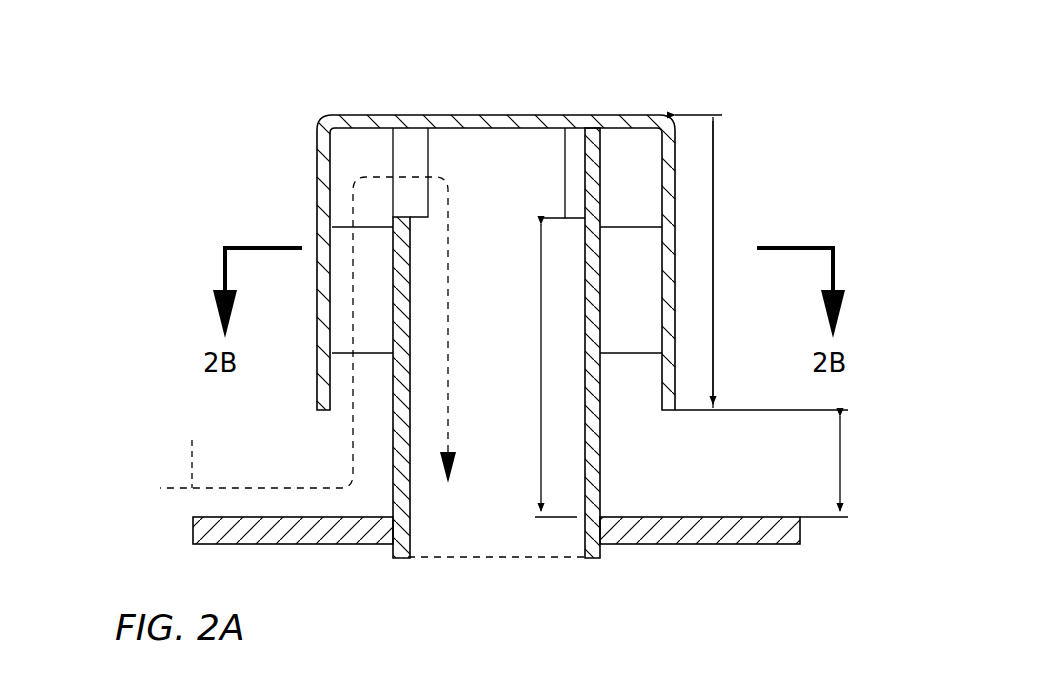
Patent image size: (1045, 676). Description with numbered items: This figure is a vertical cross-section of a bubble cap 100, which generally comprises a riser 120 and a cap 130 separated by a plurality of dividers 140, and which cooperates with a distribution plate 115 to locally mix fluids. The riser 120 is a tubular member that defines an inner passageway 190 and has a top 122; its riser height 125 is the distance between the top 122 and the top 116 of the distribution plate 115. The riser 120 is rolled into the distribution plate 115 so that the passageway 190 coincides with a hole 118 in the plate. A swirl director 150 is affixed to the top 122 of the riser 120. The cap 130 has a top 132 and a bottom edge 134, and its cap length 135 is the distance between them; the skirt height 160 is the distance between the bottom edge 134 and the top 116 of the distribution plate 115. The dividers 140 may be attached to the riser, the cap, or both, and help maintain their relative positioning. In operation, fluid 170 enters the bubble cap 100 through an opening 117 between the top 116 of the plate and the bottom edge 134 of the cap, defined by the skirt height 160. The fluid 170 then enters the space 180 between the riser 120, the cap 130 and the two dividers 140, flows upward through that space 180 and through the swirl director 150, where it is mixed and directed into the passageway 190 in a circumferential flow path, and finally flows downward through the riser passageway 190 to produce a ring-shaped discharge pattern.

The bubble cap 100 is at (282, 105).
The distribution plate 115 is at (712, 548).
The top of the distribution plate 116 is at (203, 515).
The opening 117 is at (318, 459).
The holes 118 is at (514, 560).
The riser 120 is at (604, 446).
The top of the riser 122 is at (412, 228).
The riser height 125 is at (541, 393).
The cap 130 is at (692, 232).
The top of the cap 132 is at (528, 115).
The bottom edge of the cap 134 is at (668, 413).
The cap length 135 is at (720, 302).
The dividers 140 is at (346, 216).
The swirl director 150 is at (407, 140).
The skirt height 160 is at (840, 470).
The fluid 170 is at (186, 440).
The space 180 is at (340, 400).
The inner passageway 190 is at (428, 300).